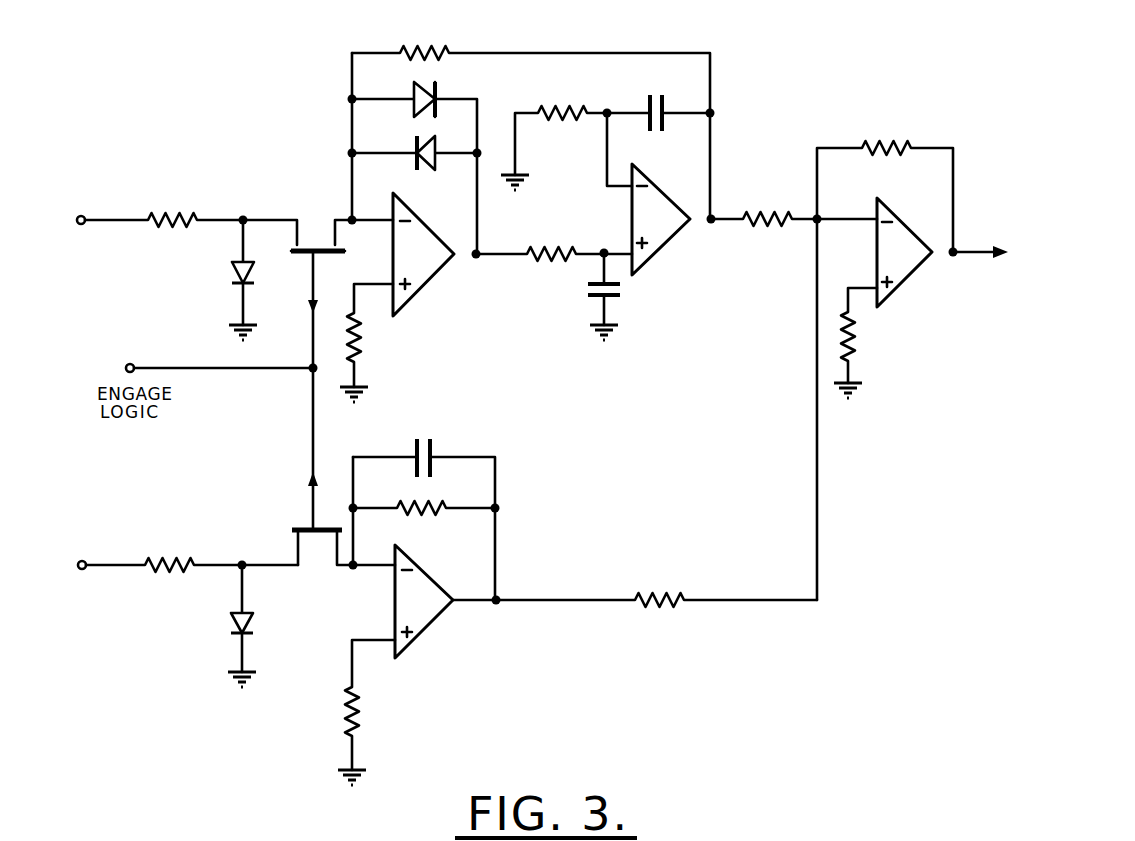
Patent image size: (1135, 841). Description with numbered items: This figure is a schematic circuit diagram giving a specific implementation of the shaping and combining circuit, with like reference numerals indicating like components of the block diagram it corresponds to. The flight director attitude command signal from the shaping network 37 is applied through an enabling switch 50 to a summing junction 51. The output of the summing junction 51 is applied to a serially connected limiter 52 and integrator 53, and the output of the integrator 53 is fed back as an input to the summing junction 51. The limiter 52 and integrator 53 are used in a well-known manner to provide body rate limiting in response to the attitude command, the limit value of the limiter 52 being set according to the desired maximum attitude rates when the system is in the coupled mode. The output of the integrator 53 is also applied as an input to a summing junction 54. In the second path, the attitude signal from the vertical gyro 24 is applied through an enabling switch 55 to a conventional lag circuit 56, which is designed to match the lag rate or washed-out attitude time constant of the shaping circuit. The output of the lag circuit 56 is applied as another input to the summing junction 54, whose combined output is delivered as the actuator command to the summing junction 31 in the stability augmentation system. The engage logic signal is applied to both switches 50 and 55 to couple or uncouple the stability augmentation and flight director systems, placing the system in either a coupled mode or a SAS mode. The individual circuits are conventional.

The enabling switch 50 is at (314, 218).
The summing junction 51 is at (383, 246).
The limiter 52 is at (488, 302).
The integrator 53 is at (709, 280).
The summing junction 54 is at (798, 280).
The enabling switch 55 is at (318, 565).
The lag circuit 56 is at (494, 645).
The shaping network 37 is at (163, 204).
The vertical gyro 24 is at (169, 656).
The summing junction 31 is at (983, 256).